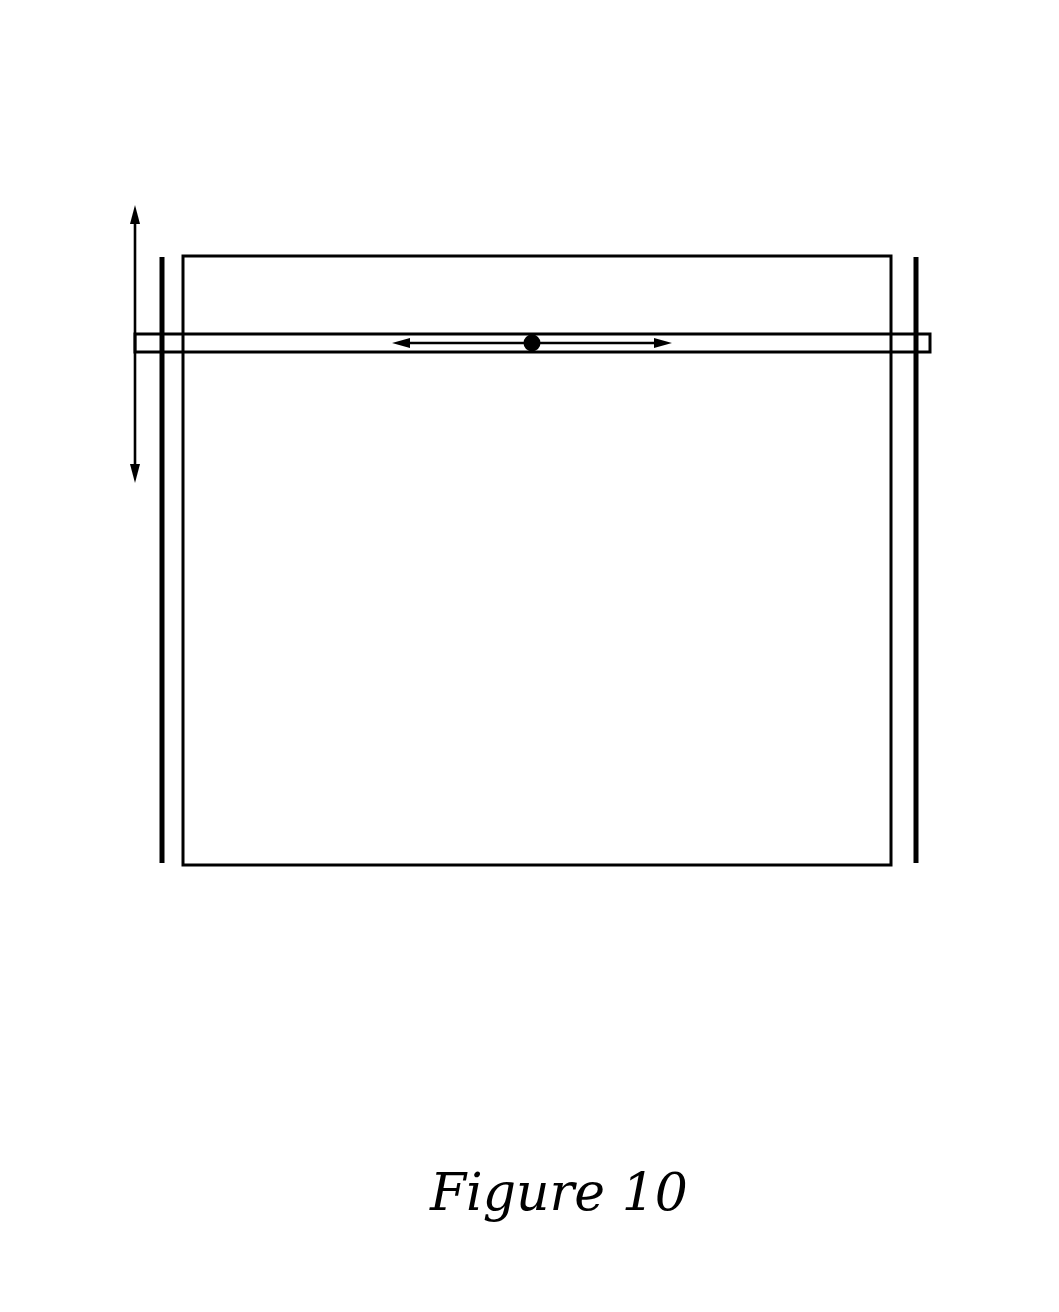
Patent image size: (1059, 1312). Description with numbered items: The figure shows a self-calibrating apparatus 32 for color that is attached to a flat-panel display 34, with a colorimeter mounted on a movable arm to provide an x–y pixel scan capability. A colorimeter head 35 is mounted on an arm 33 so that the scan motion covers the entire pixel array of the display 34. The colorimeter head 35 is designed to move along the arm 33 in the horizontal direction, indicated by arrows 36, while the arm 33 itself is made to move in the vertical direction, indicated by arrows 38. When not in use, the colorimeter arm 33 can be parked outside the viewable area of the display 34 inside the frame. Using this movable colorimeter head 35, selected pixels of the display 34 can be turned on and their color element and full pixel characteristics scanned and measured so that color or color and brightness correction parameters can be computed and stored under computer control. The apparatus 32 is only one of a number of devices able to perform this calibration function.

The apparatus 32 is at (838, 140).
The arm 33 is at (267, 347).
The display 34 is at (598, 735).
The colorimeter head 35 is at (532, 352).
The arrows 36 is at (484, 346).
The arrows 38 is at (135, 263).